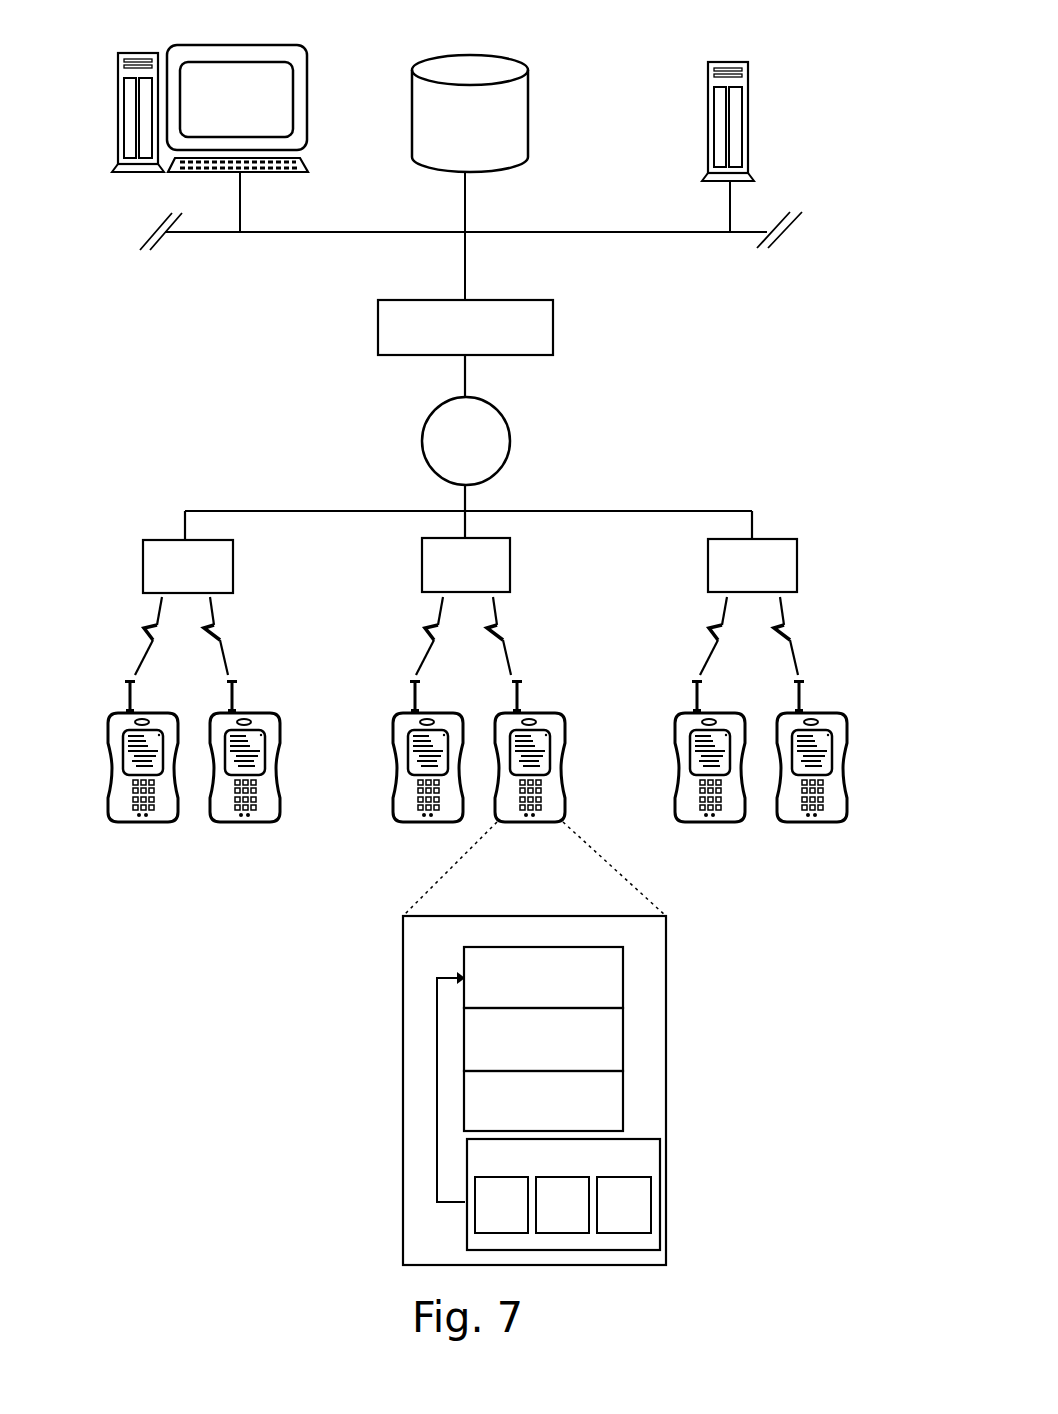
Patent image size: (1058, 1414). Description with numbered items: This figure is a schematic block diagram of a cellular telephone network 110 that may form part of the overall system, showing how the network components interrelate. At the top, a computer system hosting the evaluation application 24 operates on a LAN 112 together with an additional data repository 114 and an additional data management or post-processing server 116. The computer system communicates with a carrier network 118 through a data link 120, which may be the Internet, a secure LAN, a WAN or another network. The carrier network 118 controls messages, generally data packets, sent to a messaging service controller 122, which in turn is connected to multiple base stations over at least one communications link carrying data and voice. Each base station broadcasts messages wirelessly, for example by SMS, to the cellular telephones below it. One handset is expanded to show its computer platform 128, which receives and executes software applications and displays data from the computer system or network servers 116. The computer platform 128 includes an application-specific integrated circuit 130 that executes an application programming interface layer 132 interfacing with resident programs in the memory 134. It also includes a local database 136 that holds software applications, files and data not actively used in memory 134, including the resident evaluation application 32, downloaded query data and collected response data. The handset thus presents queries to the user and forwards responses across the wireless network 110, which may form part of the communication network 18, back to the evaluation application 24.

The cellular telephone network 110 is at (612, 66).
The evaluation application 24 is at (115, 117).
The data repository 114 is at (450, 133).
The data management or post-processing server 116 is at (708, 107).
The LAN 112 is at (318, 232).
The data link 120 is at (465, 285).
The carrier network 118 is at (449, 350).
The messaging service controller 122 is at (497, 405).
The computer platform 128 is at (402, 1030).
The memory 134 is at (624, 968).
The application programming interface layer 132 is at (624, 1018).
The application-specific integrated circuit 130 is at (624, 1070).
The local database 136 is at (602, 1194).
The resident evaluation application 32 is at (490, 1215).
The communication network 18 is at (613, 1215).